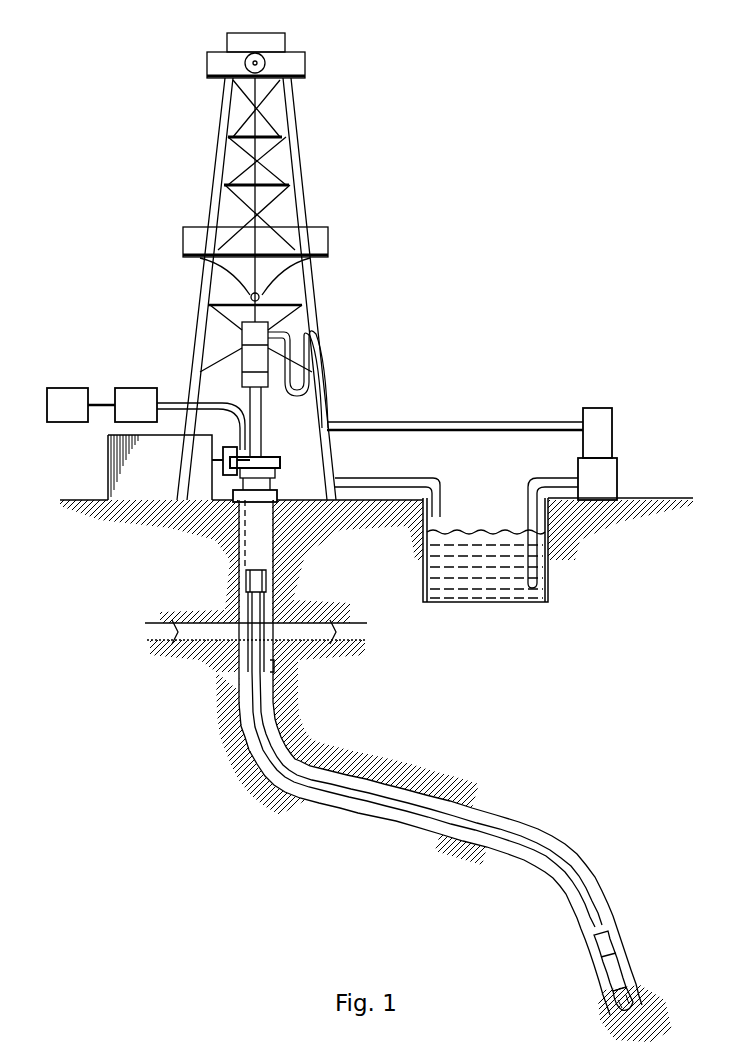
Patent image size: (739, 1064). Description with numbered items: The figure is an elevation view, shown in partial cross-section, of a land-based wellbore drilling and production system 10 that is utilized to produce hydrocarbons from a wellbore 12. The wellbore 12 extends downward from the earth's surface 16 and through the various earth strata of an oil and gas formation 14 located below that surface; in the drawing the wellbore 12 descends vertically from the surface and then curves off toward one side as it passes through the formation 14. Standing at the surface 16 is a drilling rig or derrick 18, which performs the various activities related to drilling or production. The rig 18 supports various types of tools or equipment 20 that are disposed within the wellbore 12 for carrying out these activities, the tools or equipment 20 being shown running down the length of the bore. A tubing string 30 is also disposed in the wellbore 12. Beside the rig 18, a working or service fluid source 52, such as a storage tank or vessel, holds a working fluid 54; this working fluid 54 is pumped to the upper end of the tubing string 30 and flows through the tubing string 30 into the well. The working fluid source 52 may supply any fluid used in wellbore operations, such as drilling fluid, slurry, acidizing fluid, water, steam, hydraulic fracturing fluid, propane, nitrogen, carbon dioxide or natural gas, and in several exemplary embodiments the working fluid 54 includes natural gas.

The wellbore drilling and production system 10 is at (123, 62).
The wellbore 12 is at (299, 791).
The oil and gas formation 14 is at (392, 703).
The earth's surface 16 is at (650, 498).
The drilling rig or derrick 18 is at (301, 148).
The tools or equipment 20 is at (428, 800).
The tubing string 30 is at (273, 600).
The working or service fluid source 52 is at (486, 605).
The working fluid 54 is at (477, 530).